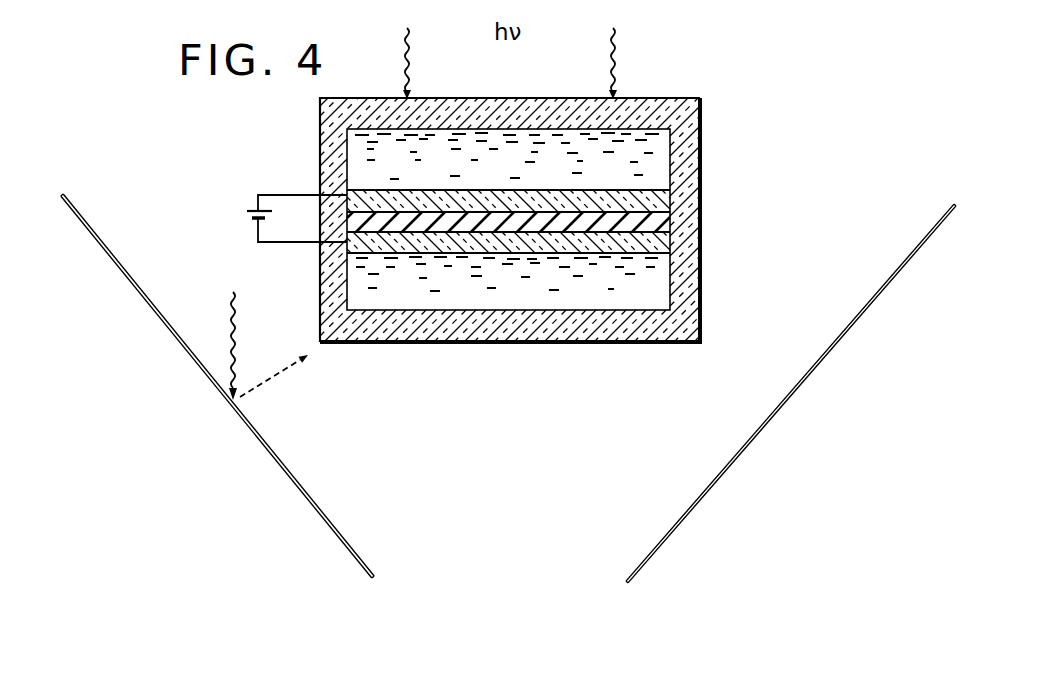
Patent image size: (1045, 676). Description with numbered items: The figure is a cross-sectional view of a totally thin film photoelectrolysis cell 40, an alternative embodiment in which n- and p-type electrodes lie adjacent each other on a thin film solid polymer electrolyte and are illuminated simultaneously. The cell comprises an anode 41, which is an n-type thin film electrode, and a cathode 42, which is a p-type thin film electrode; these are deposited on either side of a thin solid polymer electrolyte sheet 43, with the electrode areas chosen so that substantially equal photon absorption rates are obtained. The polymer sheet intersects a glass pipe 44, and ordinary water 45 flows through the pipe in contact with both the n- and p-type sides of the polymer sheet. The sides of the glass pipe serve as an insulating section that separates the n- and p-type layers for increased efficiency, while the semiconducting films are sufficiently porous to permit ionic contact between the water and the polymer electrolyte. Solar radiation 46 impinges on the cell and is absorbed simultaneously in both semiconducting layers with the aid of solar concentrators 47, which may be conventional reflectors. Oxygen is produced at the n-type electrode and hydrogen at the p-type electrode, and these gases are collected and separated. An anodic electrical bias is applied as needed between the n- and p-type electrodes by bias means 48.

The thin film photoelectrolysis cell 40 is at (707, 152).
The anode 41 is at (661, 205).
The cathode 42 is at (666, 245).
The thin solid polymer electrolyte sheet 43 is at (664, 229).
The glass pipe 44 is at (684, 318).
The water 45 is at (531, 148).
The solar radiation 46 is at (407, 66).
The solar concentrators 47 is at (262, 446).
The bias means 48 is at (252, 208).